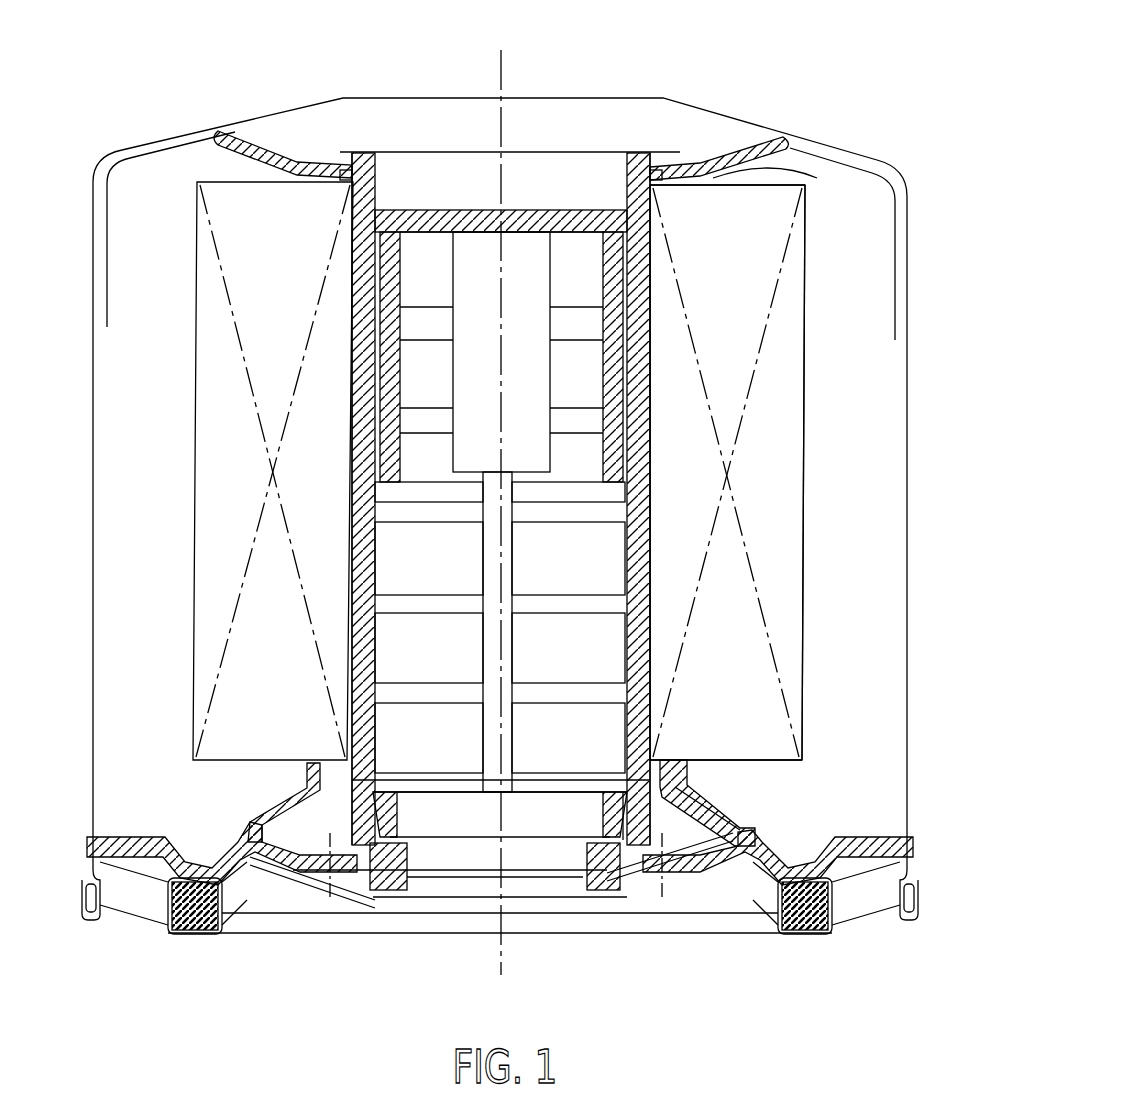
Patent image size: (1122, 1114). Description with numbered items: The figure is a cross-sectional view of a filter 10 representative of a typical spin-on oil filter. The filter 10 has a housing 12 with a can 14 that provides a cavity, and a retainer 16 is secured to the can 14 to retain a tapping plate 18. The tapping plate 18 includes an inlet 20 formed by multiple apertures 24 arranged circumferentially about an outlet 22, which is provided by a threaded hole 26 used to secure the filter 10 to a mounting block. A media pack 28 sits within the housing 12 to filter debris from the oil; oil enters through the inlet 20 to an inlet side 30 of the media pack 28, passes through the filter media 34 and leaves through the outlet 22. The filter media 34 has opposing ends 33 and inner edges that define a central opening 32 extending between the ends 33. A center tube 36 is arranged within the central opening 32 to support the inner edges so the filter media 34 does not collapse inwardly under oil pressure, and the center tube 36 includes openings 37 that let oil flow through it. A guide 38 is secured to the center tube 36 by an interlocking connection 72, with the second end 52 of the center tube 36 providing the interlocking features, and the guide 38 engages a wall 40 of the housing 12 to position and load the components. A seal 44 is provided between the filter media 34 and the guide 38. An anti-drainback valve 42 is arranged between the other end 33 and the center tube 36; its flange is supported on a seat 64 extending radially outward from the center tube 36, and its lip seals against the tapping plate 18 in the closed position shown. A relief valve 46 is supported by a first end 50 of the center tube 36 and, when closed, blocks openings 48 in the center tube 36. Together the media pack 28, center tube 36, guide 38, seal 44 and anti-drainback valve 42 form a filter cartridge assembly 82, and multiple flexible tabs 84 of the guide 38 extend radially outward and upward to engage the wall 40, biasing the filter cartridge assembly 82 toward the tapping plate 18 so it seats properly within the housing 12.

The filter 10 is at (826, 62).
The housing 12 is at (907, 422).
The can 14 is at (907, 763).
The retainer 16 is at (847, 893).
The tapping plate 18 is at (873, 848).
The inlet 20 is at (683, 865).
The outlet 22 is at (422, 855).
The apertures 24 is at (650, 887).
The threaded hole 26 is at (538, 870).
The media pack 28 is at (808, 368).
The inlet side 30 is at (866, 440).
The central opening 32 is at (582, 570).
The ends 33 is at (780, 186).
The filter media 34 is at (740, 695).
The center tube 36 is at (622, 630).
The openings 37 is at (436, 522).
The guide 38 is at (622, 177).
The wall 40 is at (705, 122).
The anti-drainback valve 42 is at (722, 810).
The seal 44 is at (818, 178).
The relief valve 46 is at (596, 813).
The openings 48 is at (362, 808).
The first end 50 is at (643, 827).
The second end 52 is at (627, 313).
The seat 64 is at (673, 762).
The interlocking connection 72 is at (345, 352).
The filter cartridge assembly 82 is at (806, 570).
The flexible tabs 84 is at (700, 147).